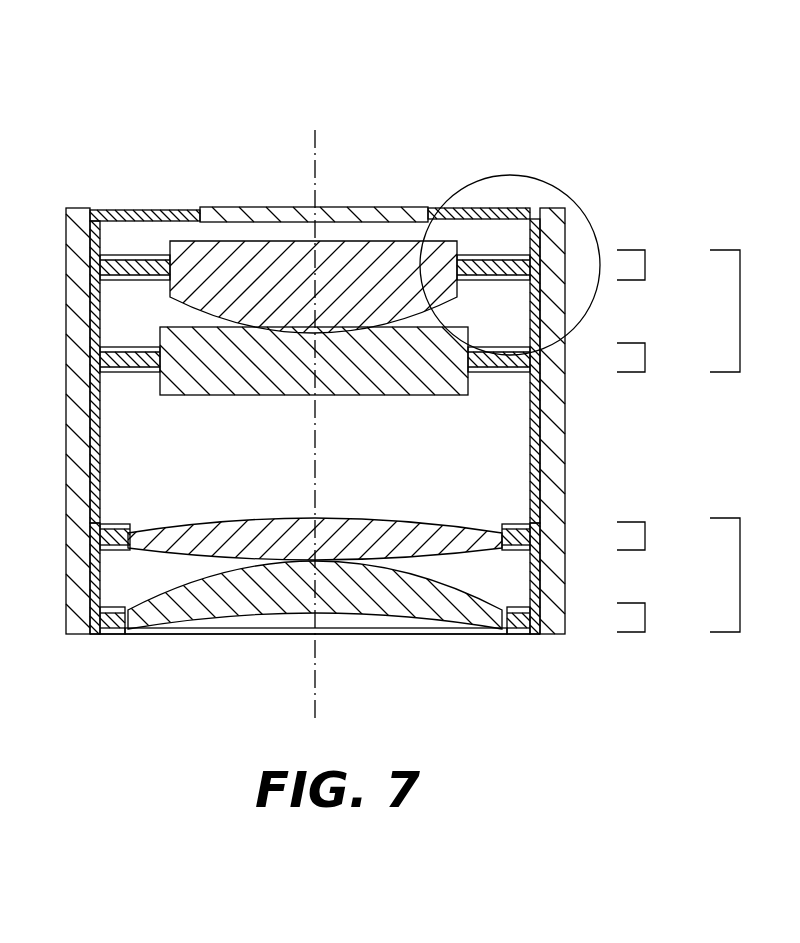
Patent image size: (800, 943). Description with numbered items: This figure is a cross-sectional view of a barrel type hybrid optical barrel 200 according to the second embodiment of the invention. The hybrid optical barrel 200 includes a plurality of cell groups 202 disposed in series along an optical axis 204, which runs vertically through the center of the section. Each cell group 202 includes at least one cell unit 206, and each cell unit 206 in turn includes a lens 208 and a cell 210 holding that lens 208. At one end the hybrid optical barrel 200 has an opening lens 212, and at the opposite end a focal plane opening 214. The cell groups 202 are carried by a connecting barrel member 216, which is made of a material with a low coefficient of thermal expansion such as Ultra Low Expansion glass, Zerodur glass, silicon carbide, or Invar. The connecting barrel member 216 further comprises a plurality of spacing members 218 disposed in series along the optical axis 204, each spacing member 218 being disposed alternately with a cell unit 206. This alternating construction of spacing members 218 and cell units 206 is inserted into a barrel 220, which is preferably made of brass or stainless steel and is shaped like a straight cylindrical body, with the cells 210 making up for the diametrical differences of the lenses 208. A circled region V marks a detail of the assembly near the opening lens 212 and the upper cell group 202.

The hybrid optical barrel 200 is at (123, 120).
The cell group 202 is at (755, 441).
The optical axis 204 is at (319, 406).
The cell unit 206 is at (661, 441).
The lens 208 is at (198, 250).
The cell 210 is at (115, 265).
The opening lens 212 is at (277, 216).
The focal plane opening 214 is at (405, 631).
The connecting barrel member 216 is at (540, 421).
The spacing member 218 is at (540, 573).
The barrel 220 is at (553, 483).
The detail view circle V is at (460, 188).